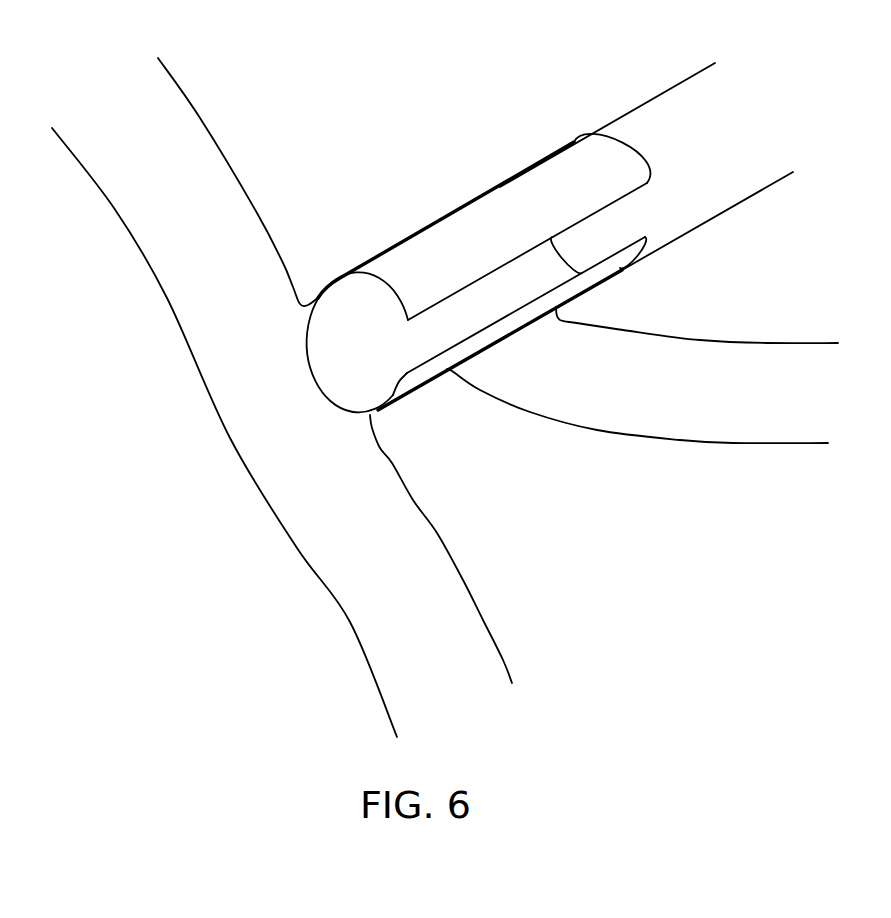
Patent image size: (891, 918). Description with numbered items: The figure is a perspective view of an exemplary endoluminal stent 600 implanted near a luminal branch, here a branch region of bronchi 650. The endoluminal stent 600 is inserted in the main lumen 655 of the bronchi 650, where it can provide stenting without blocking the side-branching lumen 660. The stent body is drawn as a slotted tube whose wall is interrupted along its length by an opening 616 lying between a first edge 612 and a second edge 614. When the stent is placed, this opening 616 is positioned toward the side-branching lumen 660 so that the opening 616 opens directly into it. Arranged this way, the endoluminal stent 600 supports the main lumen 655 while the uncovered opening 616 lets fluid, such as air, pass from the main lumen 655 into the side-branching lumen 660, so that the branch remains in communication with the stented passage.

The endoluminal stent 600 is at (508, 275).
The first edge 612 is at (597, 210).
The second edge 614 is at (610, 256).
The opening 616 is at (428, 327).
The bronchi 650 is at (717, 203).
The lumen 655 is at (687, 105).
The side-branching lumen 660 is at (759, 413).